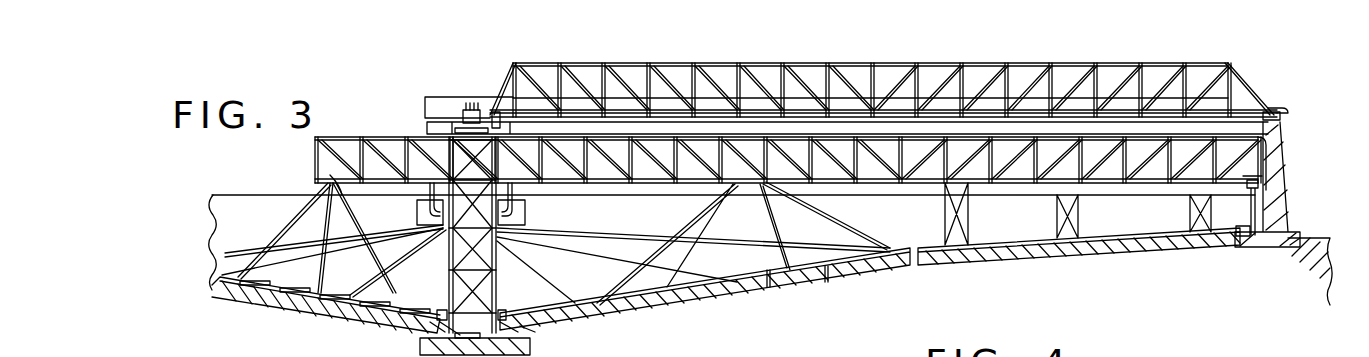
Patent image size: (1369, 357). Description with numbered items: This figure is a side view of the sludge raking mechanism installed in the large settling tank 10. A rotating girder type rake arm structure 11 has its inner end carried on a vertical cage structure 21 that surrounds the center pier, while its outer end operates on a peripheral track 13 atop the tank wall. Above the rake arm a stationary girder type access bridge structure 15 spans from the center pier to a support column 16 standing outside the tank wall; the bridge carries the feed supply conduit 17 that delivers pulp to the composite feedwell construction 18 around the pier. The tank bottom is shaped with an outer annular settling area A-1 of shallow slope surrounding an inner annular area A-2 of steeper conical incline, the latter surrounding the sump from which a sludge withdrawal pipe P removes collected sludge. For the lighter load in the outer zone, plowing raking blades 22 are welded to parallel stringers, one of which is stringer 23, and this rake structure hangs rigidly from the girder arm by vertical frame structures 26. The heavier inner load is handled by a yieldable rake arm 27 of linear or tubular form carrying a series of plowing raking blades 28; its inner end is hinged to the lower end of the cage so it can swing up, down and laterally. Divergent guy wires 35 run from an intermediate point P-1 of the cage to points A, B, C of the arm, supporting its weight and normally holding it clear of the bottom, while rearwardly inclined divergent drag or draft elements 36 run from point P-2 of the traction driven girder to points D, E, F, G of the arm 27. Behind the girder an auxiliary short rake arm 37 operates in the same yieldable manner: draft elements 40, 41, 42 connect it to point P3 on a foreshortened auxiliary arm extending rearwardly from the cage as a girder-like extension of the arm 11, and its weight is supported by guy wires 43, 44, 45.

The settling tank 10 is at (190, 259).
The rake arm structure 11 is at (630, 193).
The peripheral track 13 is at (1258, 196).
The access bridge structure 15 is at (885, 62).
The support column 16 is at (1283, 160).
The feed supply conduit 17 is at (1280, 109).
The feedwell construction 18 is at (415, 118).
The vertical cage structure 21 is at (497, 283).
The raking blades 22 is at (1122, 232).
The stringer 23 is at (1245, 234).
The vertical frame structures 26 is at (945, 214).
The yieldable rake arm 27 is at (770, 278).
The plowing raking blades 28 is at (828, 276).
The guy wires 35 is at (607, 250).
The drag or draft elements 36 is at (762, 226).
The auxiliary short rake arm 37 is at (370, 135).
The draft element 40 is at (290, 218).
The draft element 41 is at (323, 227).
The draft element 42 is at (358, 229).
The guy wire 43 is at (400, 272).
The guy wire 44 is at (348, 260).
The guy wire 45 is at (287, 246).
The point P-3 P3 is at (340, 178).
The point P-1 is at (520, 236).
The point P-2 is at (735, 190).
The point A is at (603, 298).
The point B is at (742, 272).
The point C is at (870, 251).
The point D is at (568, 299).
The point E is at (667, 287).
The point F is at (785, 264).
The point G is at (882, 246).
The point R is at (997, 248).
The sludge withdrawal pipe P is at (520, 338).
The outer annular settling area A-1 is at (1247, 288).
The inner annular area A-2 is at (912, 298).